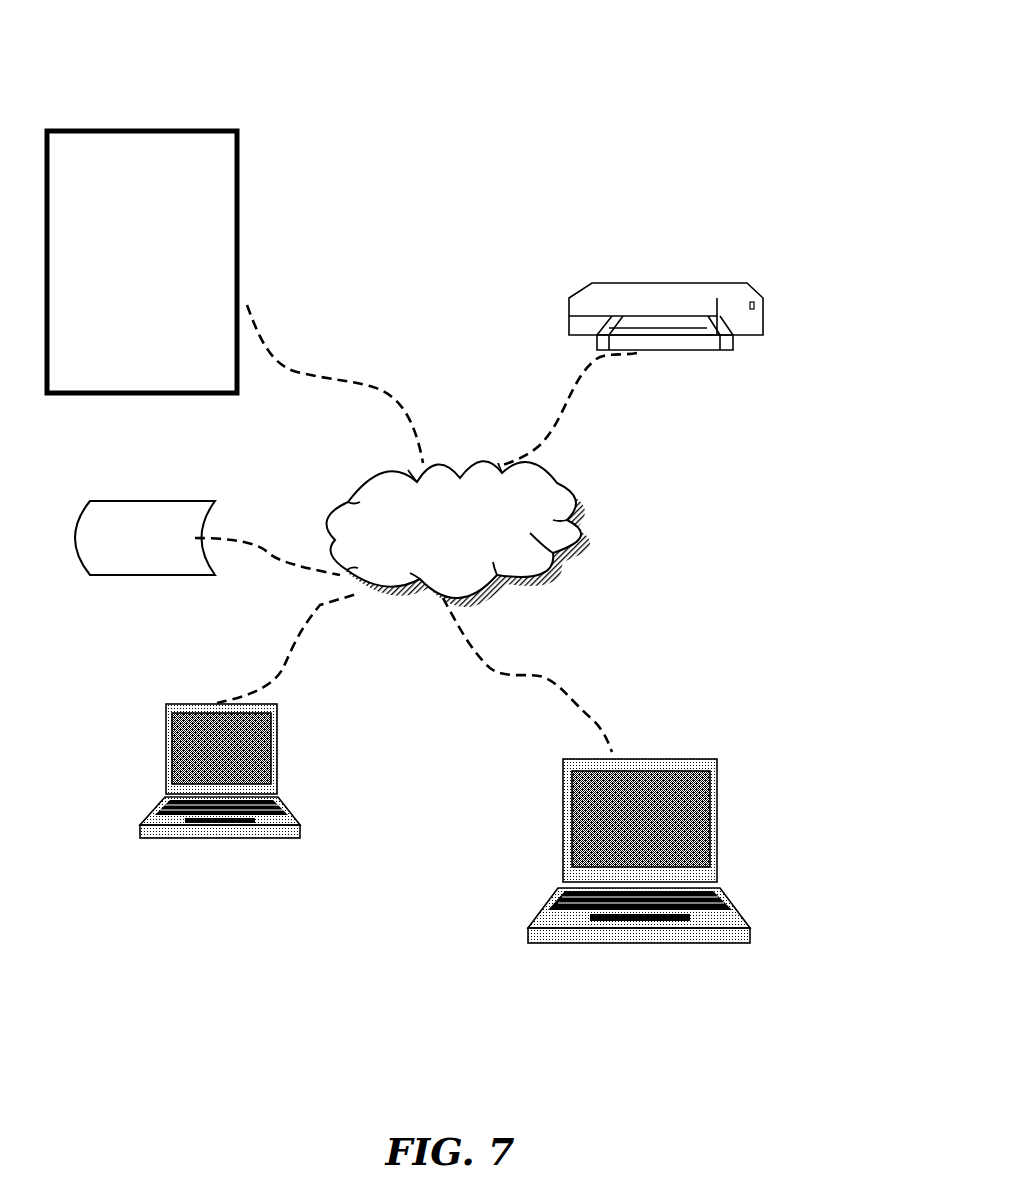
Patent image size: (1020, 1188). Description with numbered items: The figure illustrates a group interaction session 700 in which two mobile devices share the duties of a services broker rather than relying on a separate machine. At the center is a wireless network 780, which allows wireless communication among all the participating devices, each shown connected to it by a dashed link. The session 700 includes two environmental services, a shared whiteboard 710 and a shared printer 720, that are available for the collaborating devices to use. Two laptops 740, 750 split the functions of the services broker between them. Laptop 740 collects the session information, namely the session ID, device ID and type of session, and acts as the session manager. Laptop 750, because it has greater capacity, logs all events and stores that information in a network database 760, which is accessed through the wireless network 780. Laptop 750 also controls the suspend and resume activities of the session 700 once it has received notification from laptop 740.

The session 700 is at (766, 33).
The shared whiteboard 710 is at (237, 147).
The shared printer 720 is at (732, 282).
The laptop 740 is at (178, 703).
The laptop 750 is at (698, 758).
The network database 760 is at (190, 501).
The wireless network 780 is at (590, 520).